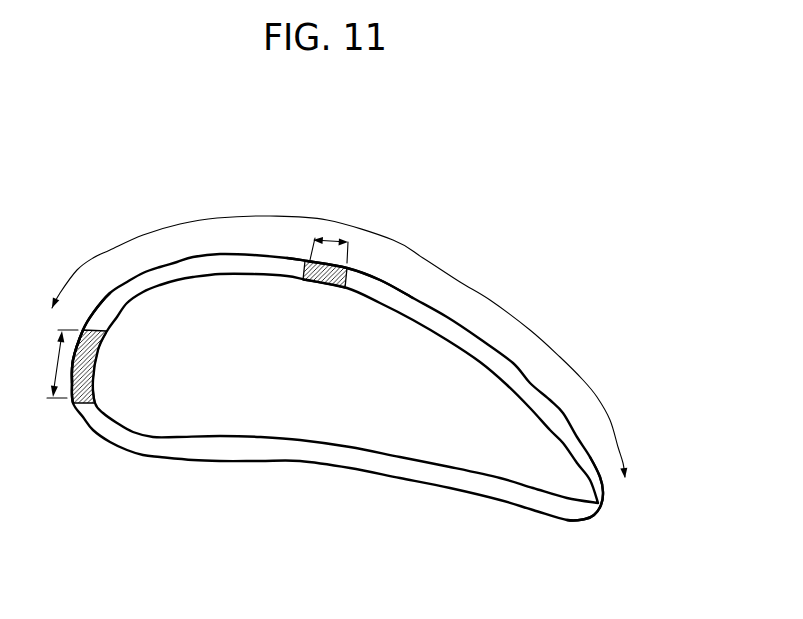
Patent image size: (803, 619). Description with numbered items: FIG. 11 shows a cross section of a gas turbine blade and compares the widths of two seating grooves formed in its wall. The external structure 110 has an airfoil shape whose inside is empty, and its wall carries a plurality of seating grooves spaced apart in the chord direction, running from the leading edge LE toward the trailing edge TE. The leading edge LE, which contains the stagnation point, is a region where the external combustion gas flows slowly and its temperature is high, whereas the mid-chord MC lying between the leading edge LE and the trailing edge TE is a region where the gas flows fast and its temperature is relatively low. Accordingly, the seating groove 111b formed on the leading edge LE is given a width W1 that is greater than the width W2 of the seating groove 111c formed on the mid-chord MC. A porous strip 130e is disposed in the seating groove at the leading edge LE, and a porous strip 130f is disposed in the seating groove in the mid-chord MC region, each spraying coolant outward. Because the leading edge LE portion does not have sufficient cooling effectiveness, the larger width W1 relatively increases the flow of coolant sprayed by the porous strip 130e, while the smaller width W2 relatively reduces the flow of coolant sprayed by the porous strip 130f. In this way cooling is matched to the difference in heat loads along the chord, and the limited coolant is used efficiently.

The external structure 110 is at (352, 451).
The seating groove 111b is at (104, 347).
The seating groove 111c is at (336, 289).
The porous strip 130e is at (82, 404).
The porous strip 130f is at (327, 289).
The leading edge LE is at (72, 359).
The trailing edge TE is at (605, 505).
The mid-chord MC is at (489, 300).
The width of seating groove W1 is at (53, 378).
The width of seating groove W2 is at (334, 240).